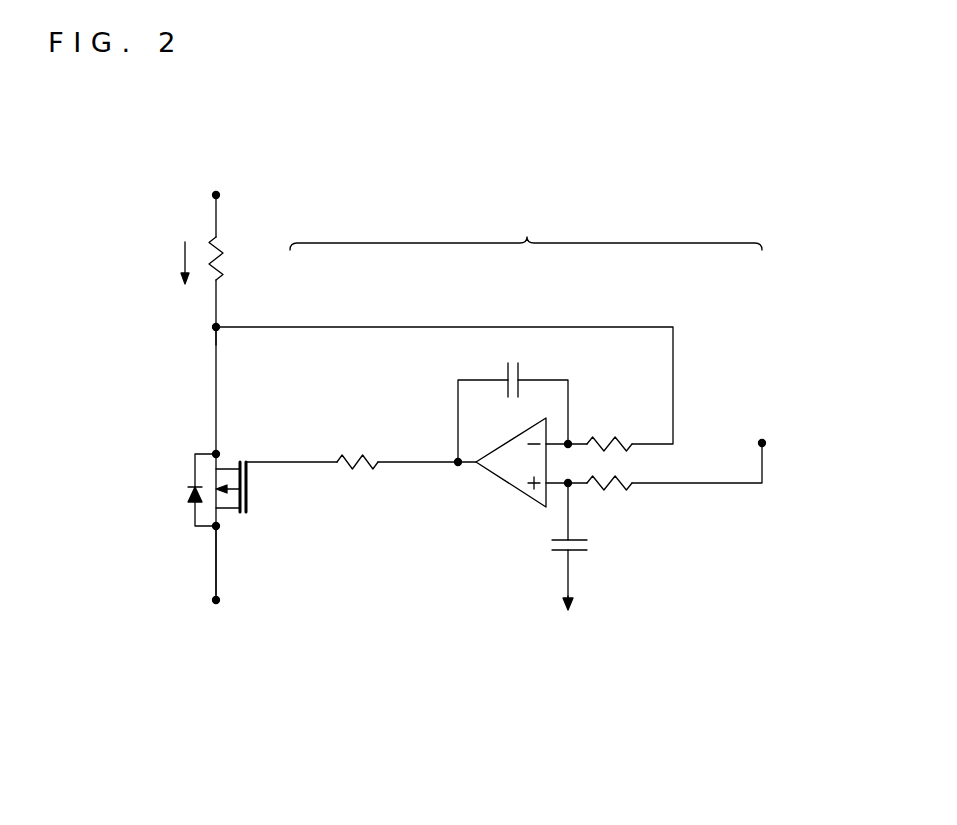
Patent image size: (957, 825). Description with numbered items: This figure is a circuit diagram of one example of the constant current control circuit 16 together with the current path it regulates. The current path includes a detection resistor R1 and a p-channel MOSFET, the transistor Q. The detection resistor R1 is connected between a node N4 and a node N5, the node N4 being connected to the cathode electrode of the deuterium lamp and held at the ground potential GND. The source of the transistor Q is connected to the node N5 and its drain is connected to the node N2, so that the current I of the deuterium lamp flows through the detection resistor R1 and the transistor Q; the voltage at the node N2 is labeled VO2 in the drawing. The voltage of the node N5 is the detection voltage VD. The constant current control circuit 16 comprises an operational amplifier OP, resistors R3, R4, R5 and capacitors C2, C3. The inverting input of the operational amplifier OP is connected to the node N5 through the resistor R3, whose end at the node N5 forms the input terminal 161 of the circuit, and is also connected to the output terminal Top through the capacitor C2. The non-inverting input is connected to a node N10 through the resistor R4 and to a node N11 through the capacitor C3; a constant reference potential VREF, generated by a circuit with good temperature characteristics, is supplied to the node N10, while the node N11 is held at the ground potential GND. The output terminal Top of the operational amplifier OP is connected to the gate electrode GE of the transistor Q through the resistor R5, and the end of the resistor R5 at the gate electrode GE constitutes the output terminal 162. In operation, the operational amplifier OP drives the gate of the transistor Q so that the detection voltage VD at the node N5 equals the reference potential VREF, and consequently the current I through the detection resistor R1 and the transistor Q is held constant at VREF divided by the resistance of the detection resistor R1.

The node N4 is at (216, 195).
The detection resistor R1 is at (213, 247).
The current I is at (177, 263).
The node N5 is at (216, 327).
The detection voltage VD is at (194, 348).
The input terminal 161 is at (312, 327).
The constant current control circuit 16 is at (526, 219).
The transistor Q is at (262, 507).
The gate electrode GE is at (249, 473).
The output terminal 162 is at (276, 461).
The resistor R5 is at (345, 452).
The output terminal Top is at (453, 470).
The operational amplifier OP is at (530, 500).
The capacitor C2 is at (520, 372).
The resistor R3 is at (600, 440).
The resistor R4 is at (600, 490).
The node N10 is at (762, 443).
The reference potential VREF is at (764, 421).
The capacitor C3 is at (577, 553).
The ground potential GND is at (568, 623).
The node N11 is at (575, 594).
The output voltage VO2 is at (191, 562).
The node N2 is at (216, 600).